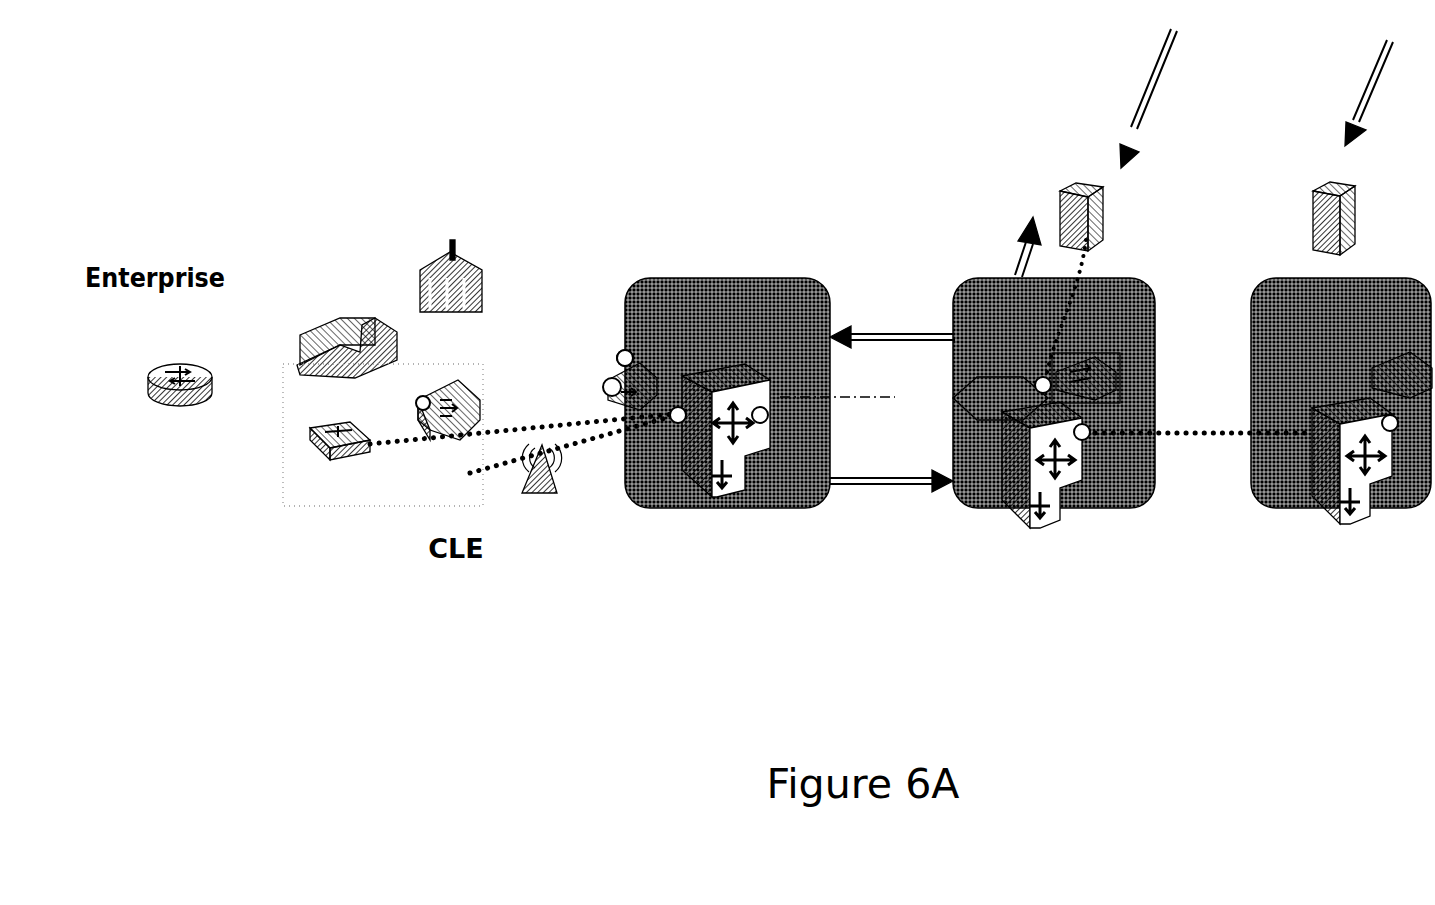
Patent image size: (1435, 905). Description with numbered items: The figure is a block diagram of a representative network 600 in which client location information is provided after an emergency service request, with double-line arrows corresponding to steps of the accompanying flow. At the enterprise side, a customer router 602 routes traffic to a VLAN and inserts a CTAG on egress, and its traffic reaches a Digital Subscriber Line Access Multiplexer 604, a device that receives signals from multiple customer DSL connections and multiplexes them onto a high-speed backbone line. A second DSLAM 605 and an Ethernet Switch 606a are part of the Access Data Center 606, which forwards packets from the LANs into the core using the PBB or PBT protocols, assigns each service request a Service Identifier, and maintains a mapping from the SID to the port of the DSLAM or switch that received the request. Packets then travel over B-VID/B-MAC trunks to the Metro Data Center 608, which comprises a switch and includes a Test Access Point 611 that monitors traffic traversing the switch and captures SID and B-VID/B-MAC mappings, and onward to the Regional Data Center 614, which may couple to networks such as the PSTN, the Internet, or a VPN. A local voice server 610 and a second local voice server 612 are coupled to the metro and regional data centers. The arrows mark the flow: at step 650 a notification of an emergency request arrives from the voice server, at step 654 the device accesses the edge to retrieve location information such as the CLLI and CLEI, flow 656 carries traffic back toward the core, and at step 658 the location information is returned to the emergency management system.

The representative network 600 is at (355, 162).
The customer router 602 is at (152, 376).
The Digital Subscriber Line Access Multiplexer 604 is at (480, 401).
The Digital Subscriber Line Access Multiplexer 605 is at (618, 354).
The Access Data Center 606 is at (707, 278).
The Ethernet Switch 606a is at (693, 433).
The Metro Data Center 608 is at (997, 505).
The local voice server 610 is at (1058, 188).
The Test Access Point 611 is at (967, 412).
The local voice server 612 is at (1358, 229).
The Regional Data Center 614 is at (1282, 506).
The emergency service request notification step 650 is at (1246, 98).
The location information retrieval step 654 is at (892, 323).
The upstream traffic flow 656 is at (891, 465).
The location information return step 658 is at (1000, 247).